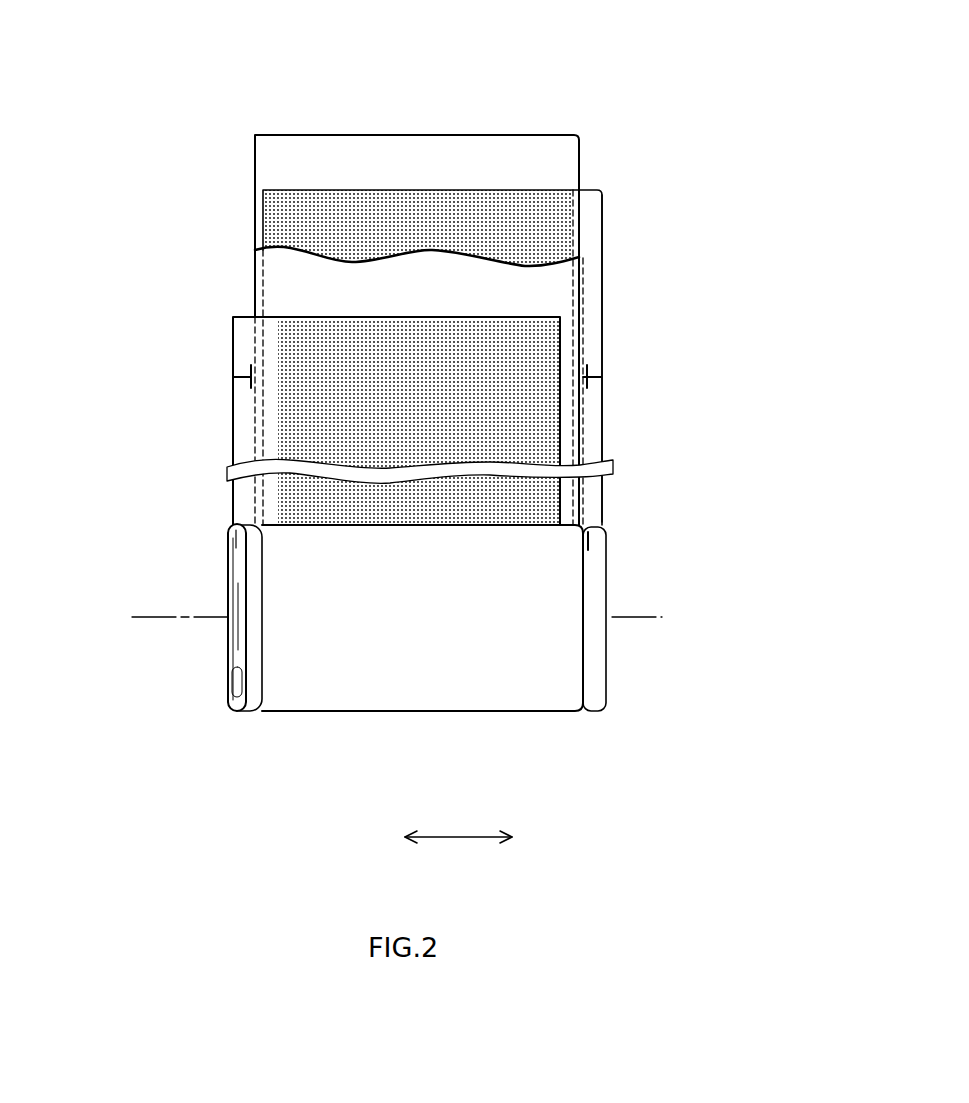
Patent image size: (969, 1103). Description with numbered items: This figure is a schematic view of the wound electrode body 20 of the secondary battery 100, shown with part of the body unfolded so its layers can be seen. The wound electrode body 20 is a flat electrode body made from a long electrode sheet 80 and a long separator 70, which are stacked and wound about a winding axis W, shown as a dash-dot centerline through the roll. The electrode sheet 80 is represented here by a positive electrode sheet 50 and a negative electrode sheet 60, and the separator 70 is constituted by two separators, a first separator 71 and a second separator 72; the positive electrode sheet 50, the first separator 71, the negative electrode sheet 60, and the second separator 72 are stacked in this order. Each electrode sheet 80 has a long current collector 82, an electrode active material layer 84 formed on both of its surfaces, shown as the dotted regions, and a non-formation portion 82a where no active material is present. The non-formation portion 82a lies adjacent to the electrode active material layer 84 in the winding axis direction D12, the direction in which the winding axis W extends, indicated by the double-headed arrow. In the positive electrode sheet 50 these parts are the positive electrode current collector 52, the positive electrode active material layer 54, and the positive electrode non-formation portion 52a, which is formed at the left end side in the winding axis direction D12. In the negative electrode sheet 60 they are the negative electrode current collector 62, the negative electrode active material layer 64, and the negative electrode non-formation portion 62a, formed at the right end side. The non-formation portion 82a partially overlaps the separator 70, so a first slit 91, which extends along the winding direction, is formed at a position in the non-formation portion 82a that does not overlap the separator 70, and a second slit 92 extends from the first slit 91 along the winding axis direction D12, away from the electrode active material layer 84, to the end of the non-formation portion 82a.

The secondary battery 100 is at (606, 80).
The separator 70 is at (185, 150).
The second separator 72 is at (273, 163).
The first separator 71 is at (287, 270).
The positive electrode sheet 50 is at (233, 358).
The negative electrode sheet 60 is at (603, 278).
The electrode sheet 80 is at (407, 449).
The positive electrode active material layer 54 is at (295, 340).
The negative electrode active material layer 64 is at (568, 207).
The electrode active material layer 84 is at (420, 356).
The positive electrode current collector 52 is at (232, 452).
The negative electrode current collector 62 is at (603, 365).
The current collector 82 is at (408, 358).
The positive electrode non-formation portion 52a is at (245, 422).
The negative electrode non-formation portion 62a is at (590, 333).
The non-formation portion 82a is at (407, 514).
The first slit 91 is at (251, 386).
The second slit 92 is at (233, 378).
The wound electrode body 20 is at (478, 690).
The winding axis W is at (374, 613).
The winding axis direction D12 is at (458, 851).